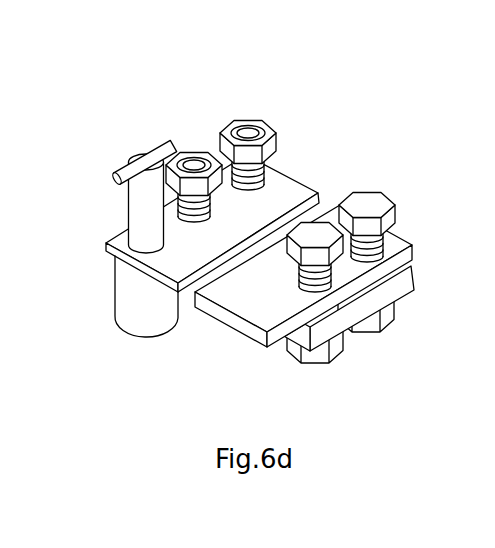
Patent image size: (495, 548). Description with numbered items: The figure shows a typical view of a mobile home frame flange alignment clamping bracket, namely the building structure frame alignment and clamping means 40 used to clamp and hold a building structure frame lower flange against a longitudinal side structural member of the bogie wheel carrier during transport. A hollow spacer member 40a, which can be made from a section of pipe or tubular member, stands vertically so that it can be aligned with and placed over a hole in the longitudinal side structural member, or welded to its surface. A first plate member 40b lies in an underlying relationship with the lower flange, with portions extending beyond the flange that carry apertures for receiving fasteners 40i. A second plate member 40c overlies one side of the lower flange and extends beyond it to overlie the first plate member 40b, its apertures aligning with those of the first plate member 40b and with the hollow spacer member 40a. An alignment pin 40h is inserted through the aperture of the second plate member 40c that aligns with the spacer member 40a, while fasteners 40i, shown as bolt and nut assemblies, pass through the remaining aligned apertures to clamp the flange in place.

The building structure frame alignment and clamping means 40 is at (340, 133).
The hollow spacer member 40a is at (122, 304).
The first plate member 40b is at (418, 278).
The second plate member 40c is at (392, 235).
The alignment pin 40h is at (140, 157).
The fasteners 40i is at (242, 122).